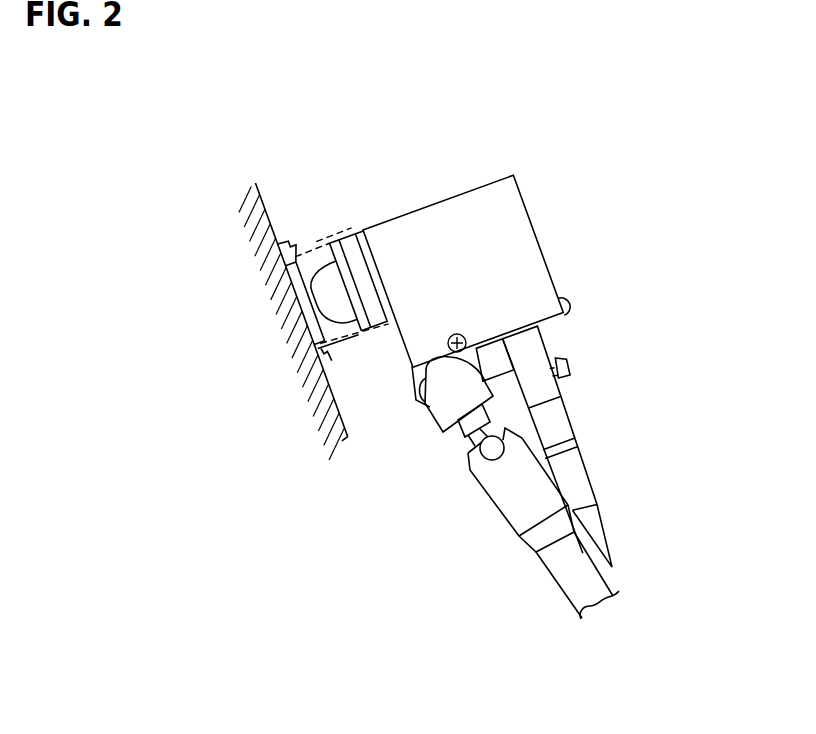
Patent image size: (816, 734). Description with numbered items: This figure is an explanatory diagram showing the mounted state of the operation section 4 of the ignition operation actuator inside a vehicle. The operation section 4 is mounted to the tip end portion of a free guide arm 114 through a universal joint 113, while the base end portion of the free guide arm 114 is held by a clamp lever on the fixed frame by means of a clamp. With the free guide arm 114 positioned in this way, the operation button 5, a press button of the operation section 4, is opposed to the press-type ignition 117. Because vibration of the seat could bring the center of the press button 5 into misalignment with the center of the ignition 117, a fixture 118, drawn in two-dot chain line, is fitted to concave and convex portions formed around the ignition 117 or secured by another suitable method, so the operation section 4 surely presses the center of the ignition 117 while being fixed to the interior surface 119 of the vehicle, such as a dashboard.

The operation section 4 is at (455, 186).
The operation button 5 is at (345, 232).
The universal joint 113 is at (443, 418).
The free guide arm 114 is at (565, 580).
The press-type ignition 117 is at (313, 240).
The fixture 118 is at (320, 278).
The interior surface 119 is at (285, 246).